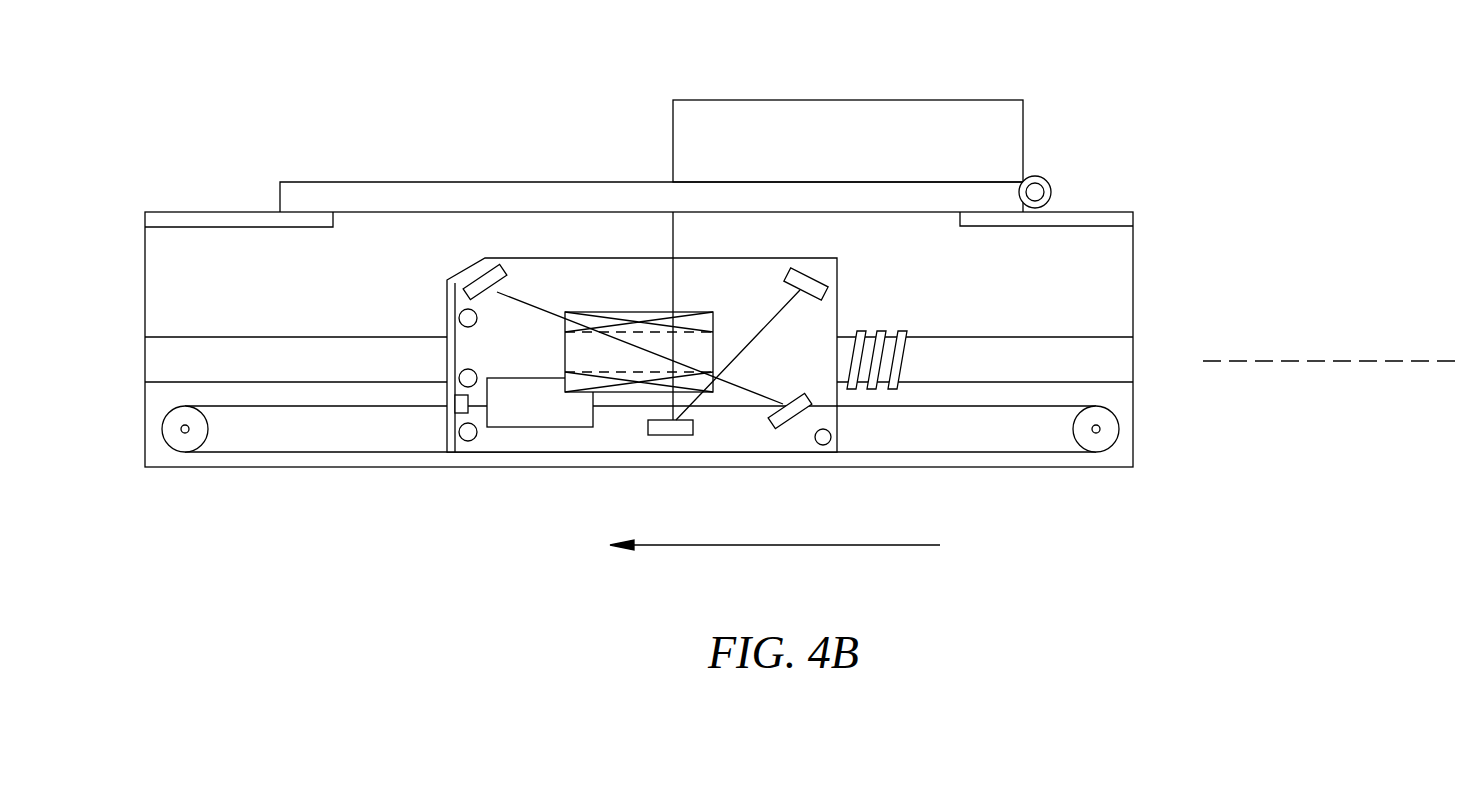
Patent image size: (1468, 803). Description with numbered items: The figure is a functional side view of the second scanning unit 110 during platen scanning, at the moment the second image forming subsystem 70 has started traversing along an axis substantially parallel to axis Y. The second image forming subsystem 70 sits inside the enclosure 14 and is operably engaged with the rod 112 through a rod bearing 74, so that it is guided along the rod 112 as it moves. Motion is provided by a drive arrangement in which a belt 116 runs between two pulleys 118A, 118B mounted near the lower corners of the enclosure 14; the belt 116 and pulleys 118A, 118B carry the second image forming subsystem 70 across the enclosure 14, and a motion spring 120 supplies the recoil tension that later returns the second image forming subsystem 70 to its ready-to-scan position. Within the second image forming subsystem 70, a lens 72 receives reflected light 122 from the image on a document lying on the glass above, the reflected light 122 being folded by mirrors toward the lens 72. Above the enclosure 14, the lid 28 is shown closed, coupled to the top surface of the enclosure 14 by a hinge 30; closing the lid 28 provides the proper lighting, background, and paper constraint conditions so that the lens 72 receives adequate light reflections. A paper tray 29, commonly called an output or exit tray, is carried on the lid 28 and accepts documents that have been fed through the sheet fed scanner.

The second enclosure 14 is at (1150, 282).
The lid 28 is at (470, 182).
The paper tray 29 is at (848, 100).
The hinge 30 is at (1044, 192).
The second image forming subsystem 70 is at (520, 255).
The lens 72 is at (540, 378).
The rod bearing 74 is at (700, 348).
The second scanning unit 110 is at (320, 598).
The rod 112 is at (1000, 353).
The belt 116 is at (358, 452).
The third pulley 118A is at (193, 450).
The fourth pulley 118B is at (1103, 460).
The motion spring 120 is at (880, 330).
The reflected light 122 is at (673, 242).
The axis Y is at (1333, 361).